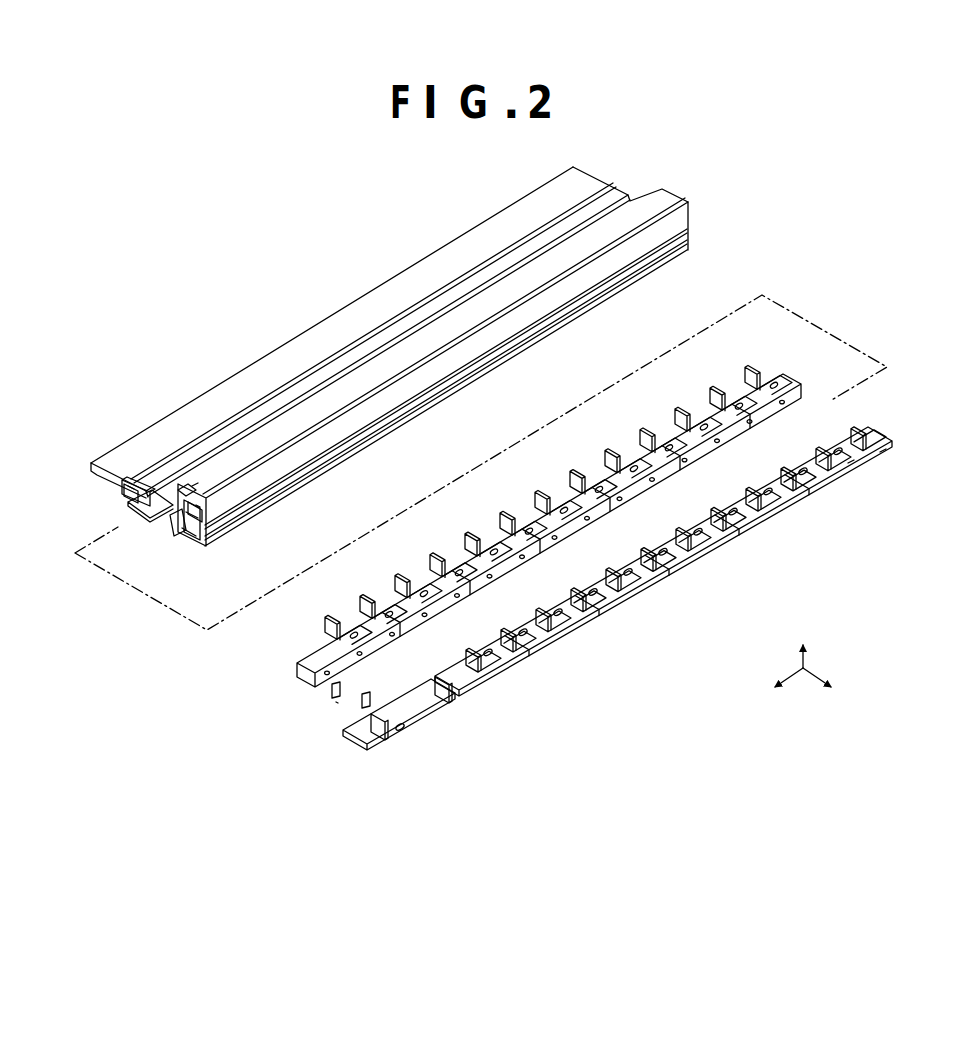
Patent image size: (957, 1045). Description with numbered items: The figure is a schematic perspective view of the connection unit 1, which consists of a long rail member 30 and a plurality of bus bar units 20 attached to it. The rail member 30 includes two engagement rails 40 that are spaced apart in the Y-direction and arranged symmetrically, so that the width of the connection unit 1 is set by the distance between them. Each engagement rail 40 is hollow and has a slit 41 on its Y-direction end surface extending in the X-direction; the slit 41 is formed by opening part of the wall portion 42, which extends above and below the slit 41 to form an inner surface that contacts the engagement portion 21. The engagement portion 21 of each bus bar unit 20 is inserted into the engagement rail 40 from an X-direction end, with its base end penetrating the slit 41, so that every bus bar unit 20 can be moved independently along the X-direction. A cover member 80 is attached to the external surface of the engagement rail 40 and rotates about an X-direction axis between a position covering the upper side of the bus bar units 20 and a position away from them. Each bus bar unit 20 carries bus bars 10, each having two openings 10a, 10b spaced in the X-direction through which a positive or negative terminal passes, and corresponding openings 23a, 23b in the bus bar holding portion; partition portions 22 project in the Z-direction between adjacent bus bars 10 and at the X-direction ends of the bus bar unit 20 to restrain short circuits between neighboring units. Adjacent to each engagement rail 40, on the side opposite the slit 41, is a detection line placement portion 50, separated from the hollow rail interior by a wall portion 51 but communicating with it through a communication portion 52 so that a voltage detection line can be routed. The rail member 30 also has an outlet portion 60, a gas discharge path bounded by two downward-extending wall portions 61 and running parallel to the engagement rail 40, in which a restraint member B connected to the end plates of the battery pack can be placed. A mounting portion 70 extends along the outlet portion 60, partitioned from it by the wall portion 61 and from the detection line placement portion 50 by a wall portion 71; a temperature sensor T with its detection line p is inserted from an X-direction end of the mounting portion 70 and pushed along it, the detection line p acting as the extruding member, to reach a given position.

The connection unit 1 is at (800, 190).
The bus bar 10 is at (932, 470).
The opening 10a is at (826, 432).
The opening 10b is at (812, 446).
The bus bar unit 20 is at (280, 672).
The engagement portion 21 is at (392, 644).
The partition portion 22 is at (395, 718).
The opening 23a is at (886, 452).
The opening 23b is at (850, 463).
The rail member 30 is at (626, 186).
The engagement rail 40 is at (694, 236).
The slit 41 is at (690, 252).
The wall portion 42 is at (660, 264).
The detection line placement portion 50 is at (127, 505).
The wall portion 51 is at (202, 516).
The communication portion 52 is at (140, 478).
The outlet portion 60 is at (158, 520).
The wall portion 61 is at (182, 505).
The mounting portion 70 is at (176, 530).
The wall portion 71 is at (196, 492).
The cover member 80 is at (690, 208).
The restraint member B is at (668, 202).
The temperature sensor T is at (365, 708).
The detection line p is at (340, 704).